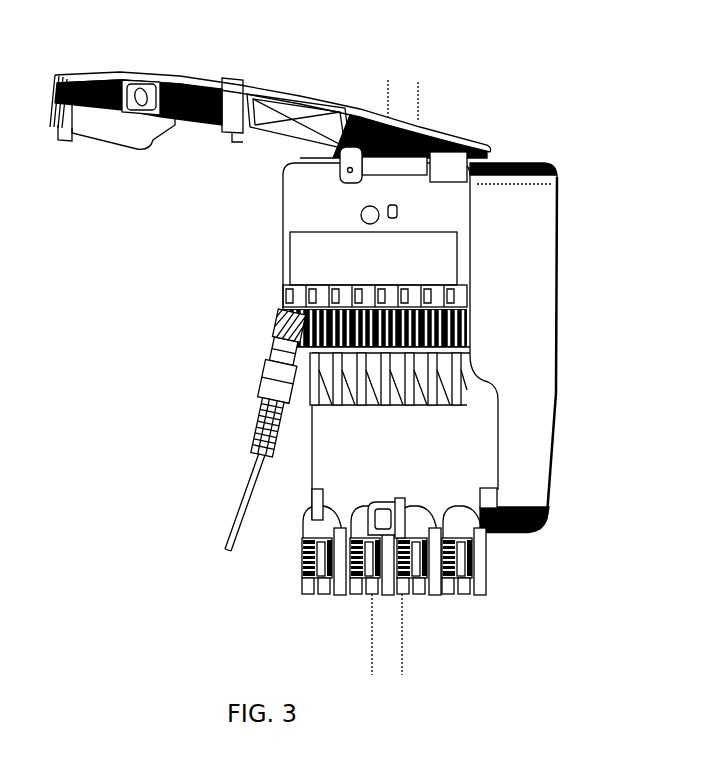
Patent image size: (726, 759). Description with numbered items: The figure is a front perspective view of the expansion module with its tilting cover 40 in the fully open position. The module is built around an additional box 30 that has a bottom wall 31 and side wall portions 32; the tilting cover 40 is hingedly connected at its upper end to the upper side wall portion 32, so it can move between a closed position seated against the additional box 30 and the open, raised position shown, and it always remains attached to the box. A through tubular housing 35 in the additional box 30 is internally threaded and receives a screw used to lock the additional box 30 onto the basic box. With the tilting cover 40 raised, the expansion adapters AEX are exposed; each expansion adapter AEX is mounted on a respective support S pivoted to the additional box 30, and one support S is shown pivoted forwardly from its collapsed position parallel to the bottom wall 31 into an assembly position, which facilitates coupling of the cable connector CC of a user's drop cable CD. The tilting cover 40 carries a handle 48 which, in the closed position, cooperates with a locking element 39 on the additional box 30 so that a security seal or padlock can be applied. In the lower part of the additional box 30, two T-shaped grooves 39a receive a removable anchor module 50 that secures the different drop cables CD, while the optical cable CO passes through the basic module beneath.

The additional box 30 is at (565, 186).
The bottom wall 31 is at (468, 455).
The side wall portions 32 is at (518, 157).
The through tubular housing 35 is at (365, 219).
The locking element 39 is at (417, 505).
The T-shaped grooves 39a is at (312, 498).
The tilting cover 40 is at (290, 84).
The handle 48 is at (167, 118).
The anchor module 50 is at (357, 603).
The support S is at (275, 329).
The expansion adapters AEX is at (265, 360).
The cable connector CC is at (247, 445).
The drop cable CD is at (228, 532).
The optical cable CO is at (408, 650).